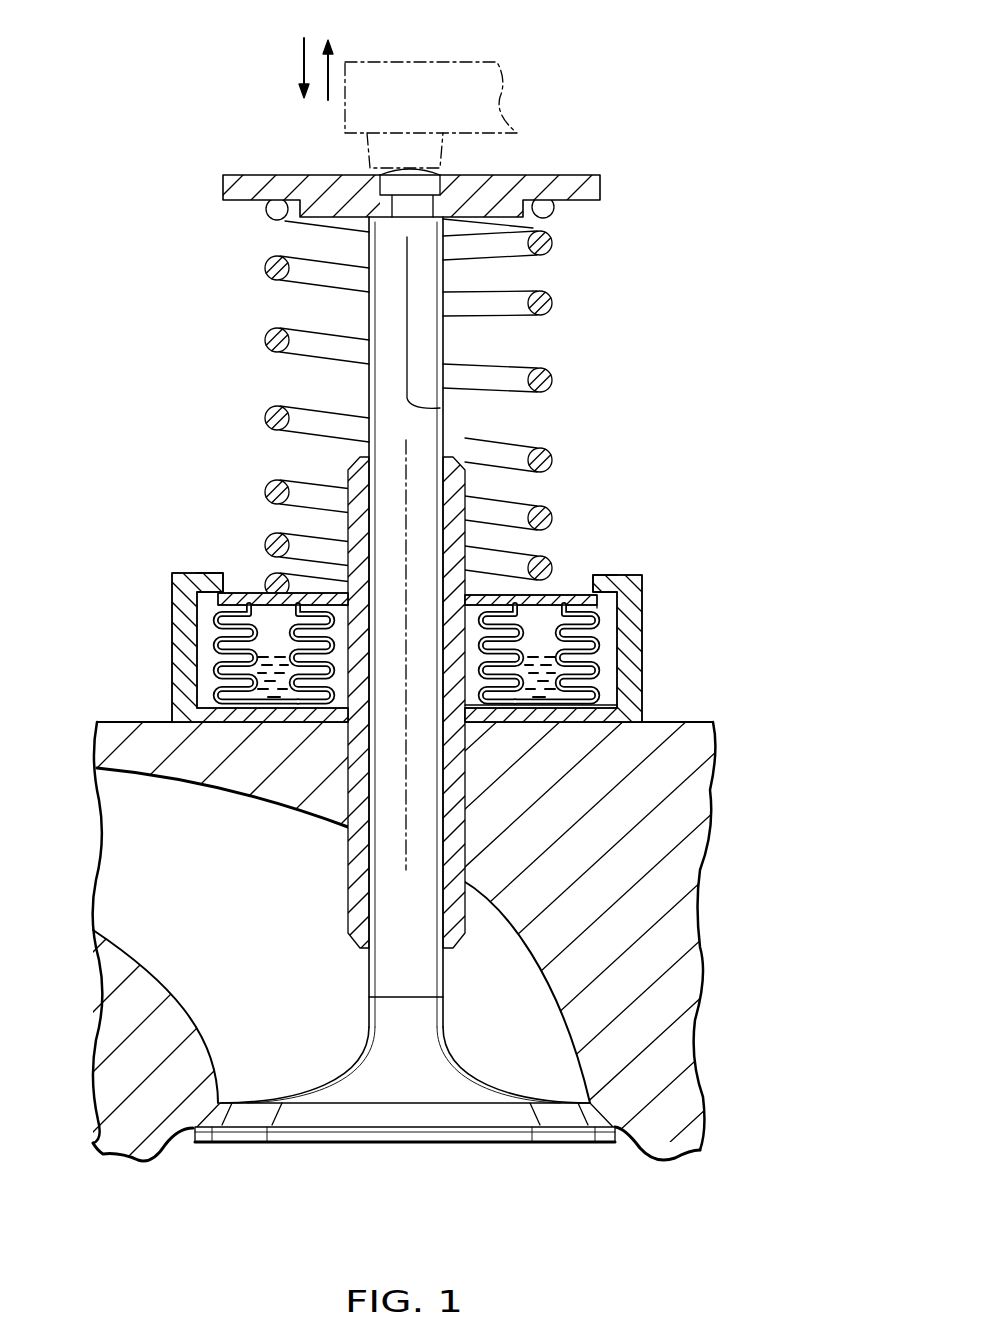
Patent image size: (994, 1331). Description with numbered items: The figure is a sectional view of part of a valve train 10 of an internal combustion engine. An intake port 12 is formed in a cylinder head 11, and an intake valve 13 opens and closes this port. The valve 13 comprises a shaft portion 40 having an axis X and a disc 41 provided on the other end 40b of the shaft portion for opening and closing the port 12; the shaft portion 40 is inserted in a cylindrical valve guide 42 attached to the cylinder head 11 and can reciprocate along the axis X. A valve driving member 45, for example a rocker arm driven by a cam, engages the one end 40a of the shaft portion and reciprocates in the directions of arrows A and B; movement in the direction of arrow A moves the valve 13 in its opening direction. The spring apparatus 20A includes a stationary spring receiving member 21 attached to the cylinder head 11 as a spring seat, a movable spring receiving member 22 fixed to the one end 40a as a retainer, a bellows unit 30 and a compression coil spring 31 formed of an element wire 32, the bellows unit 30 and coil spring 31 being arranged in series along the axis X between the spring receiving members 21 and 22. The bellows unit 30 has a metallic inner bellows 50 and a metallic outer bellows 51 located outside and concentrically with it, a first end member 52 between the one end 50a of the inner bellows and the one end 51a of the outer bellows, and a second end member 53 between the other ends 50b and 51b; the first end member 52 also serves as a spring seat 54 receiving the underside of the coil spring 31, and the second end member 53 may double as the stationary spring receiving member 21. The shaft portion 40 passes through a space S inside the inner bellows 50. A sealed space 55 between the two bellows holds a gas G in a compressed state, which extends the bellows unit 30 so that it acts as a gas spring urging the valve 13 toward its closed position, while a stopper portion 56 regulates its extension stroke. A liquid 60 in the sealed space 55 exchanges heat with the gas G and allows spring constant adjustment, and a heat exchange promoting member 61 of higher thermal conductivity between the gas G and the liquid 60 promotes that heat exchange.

The valve train 10 is at (680, 163).
The cylinder head 11 is at (688, 930).
The intake port 12 is at (553, 1047).
The intake valve 13 is at (437, 1087).
The spring apparatus 20A is at (648, 378).
The stationary spring receiving member 21 is at (235, 722).
The movable spring receiving member 22 is at (262, 176).
The bellows unit 30 is at (212, 658).
The compression coil spring 31 is at (265, 338).
The element wire 32 is at (265, 417).
The shaft portion 40 is at (390, 907).
The one end of the shaft portion 40a is at (397, 205).
The other end of the shaft portion 40b is at (367, 970).
The disc 41 is at (353, 1145).
The valve guide 42 is at (357, 803).
The valve driving member 45 is at (417, 62).
The inner bellows 50 is at (468, 705).
The one end of the inner bellows 50a is at (513, 600).
The other end of the inner bellows 50b is at (483, 730).
The outer bellows 51 is at (600, 705).
The one end of the outer bellows 51a is at (572, 603).
The other end of the outer bellows 51b is at (572, 727).
The first end member 52 is at (250, 598).
The second end member 53 is at (267, 716).
The spring seat 54 is at (180, 580).
The sealed space 55 is at (218, 626).
The stopper portion 56 is at (195, 573).
The liquid 60 is at (595, 672).
The heat exchange promoting member 61 is at (578, 628).
The arrow A is at (300, 62).
The arrow B is at (332, 72).
The gas G is at (590, 617).
The space S is at (342, 610).
The axis X is at (446, 408).